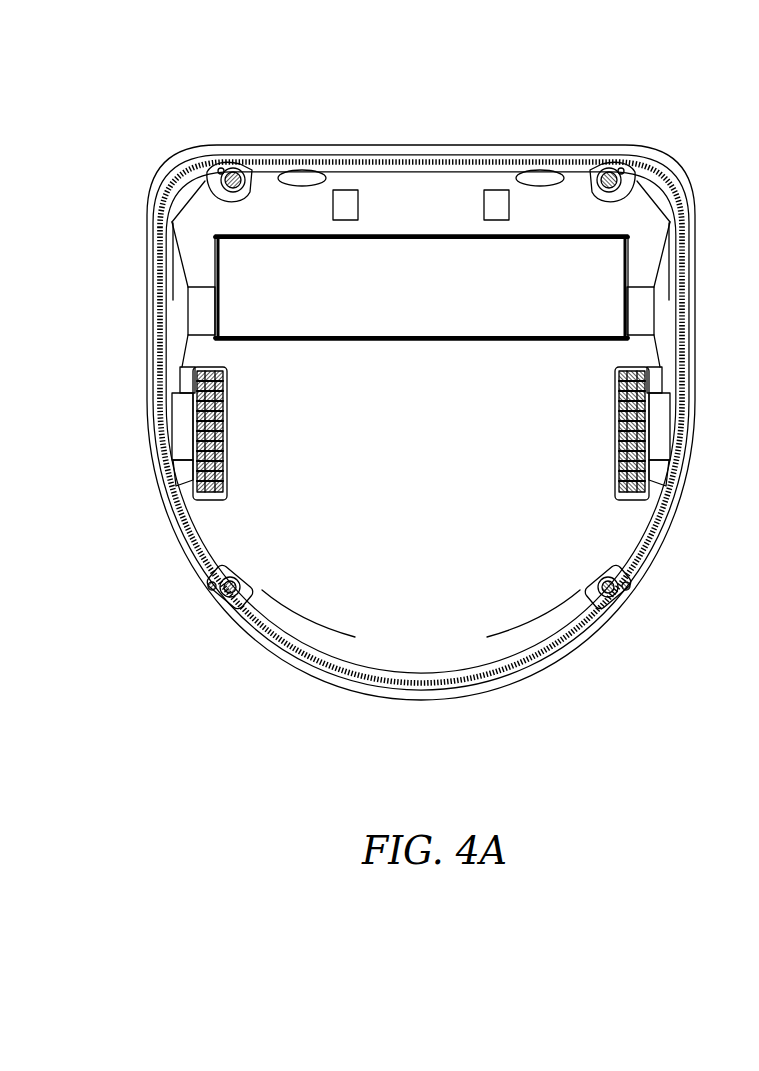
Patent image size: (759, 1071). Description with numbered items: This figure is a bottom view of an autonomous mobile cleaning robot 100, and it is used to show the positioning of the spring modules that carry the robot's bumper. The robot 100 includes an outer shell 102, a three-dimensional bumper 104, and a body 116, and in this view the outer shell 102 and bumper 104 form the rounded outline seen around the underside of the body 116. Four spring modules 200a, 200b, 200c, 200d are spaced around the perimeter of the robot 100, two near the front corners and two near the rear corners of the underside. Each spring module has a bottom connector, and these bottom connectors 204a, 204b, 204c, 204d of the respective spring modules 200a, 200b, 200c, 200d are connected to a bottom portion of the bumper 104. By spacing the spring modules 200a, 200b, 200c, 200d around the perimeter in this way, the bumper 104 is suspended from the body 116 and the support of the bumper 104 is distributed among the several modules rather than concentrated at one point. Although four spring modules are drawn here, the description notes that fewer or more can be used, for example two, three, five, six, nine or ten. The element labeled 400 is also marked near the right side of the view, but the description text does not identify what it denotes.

The autonomous mobile cleaning robot 100 is at (651, 131).
The outer shell 102 is at (187, 525).
The bumper 104 is at (295, 660).
The body 116 is at (219, 519).
The spring module 200a is at (235, 151).
The spring module 200b is at (612, 152).
The spring module 200c is at (605, 615).
The spring module 200d is at (210, 606).
The bottom connector 204a is at (247, 197).
The bottom connector 204b is at (642, 172).
The bottom connector 204c is at (620, 595).
The bottom connector 204d is at (223, 597).
The drive wheel assembly 400 is at (687, 340).